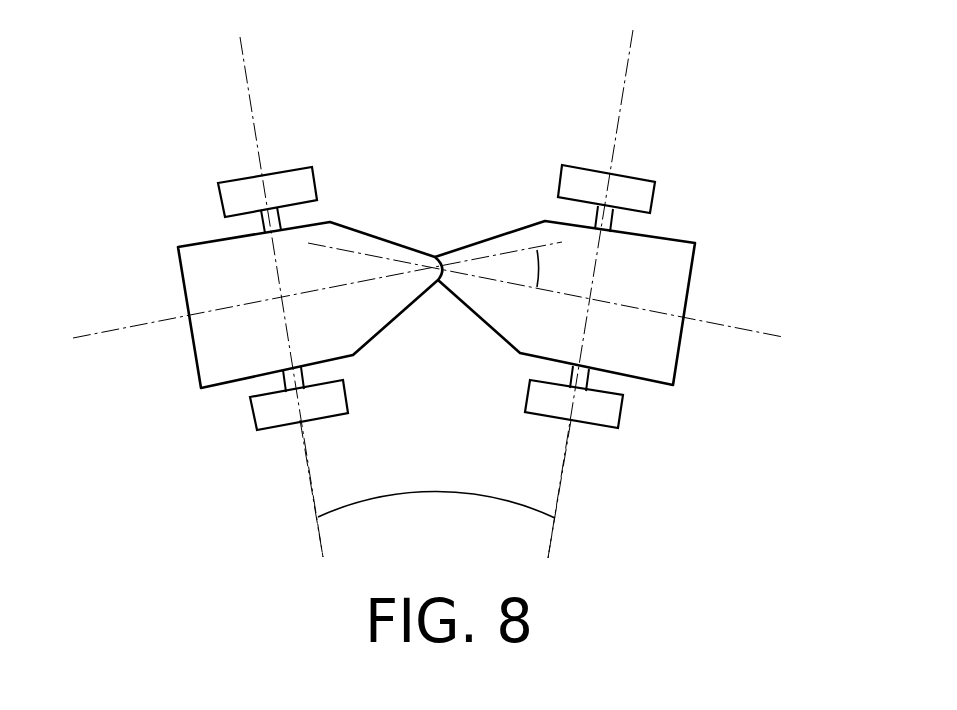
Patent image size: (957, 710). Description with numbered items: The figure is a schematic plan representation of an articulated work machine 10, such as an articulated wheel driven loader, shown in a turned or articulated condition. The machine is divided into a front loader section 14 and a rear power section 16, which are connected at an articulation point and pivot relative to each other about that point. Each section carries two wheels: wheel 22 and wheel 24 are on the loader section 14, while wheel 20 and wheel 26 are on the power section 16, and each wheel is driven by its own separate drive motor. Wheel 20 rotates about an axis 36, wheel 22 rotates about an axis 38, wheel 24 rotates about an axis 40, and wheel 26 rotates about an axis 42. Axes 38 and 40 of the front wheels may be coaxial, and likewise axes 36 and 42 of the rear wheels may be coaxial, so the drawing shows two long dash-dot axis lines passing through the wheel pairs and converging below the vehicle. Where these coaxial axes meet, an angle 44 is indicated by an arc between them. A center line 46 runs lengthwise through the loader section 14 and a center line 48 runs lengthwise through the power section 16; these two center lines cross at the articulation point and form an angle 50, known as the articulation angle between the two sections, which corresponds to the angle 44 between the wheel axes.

The work machine 10 is at (452, 285).
The loader section 14 is at (130, 283).
The power section 16 is at (755, 291).
The wheel 20 is at (619, 420).
The wheel 22 is at (251, 420).
The wheel 24 is at (314, 183).
The wheel 26 is at (656, 198).
The axis 36 is at (562, 485).
The axis 38 is at (308, 463).
The axis 40 is at (250, 98).
The axis 42 is at (625, 73).
The angle 44 is at (430, 494).
The center line 46 is at (98, 335).
The center line 48 is at (740, 330).
The articulation angle 50 is at (537, 278).